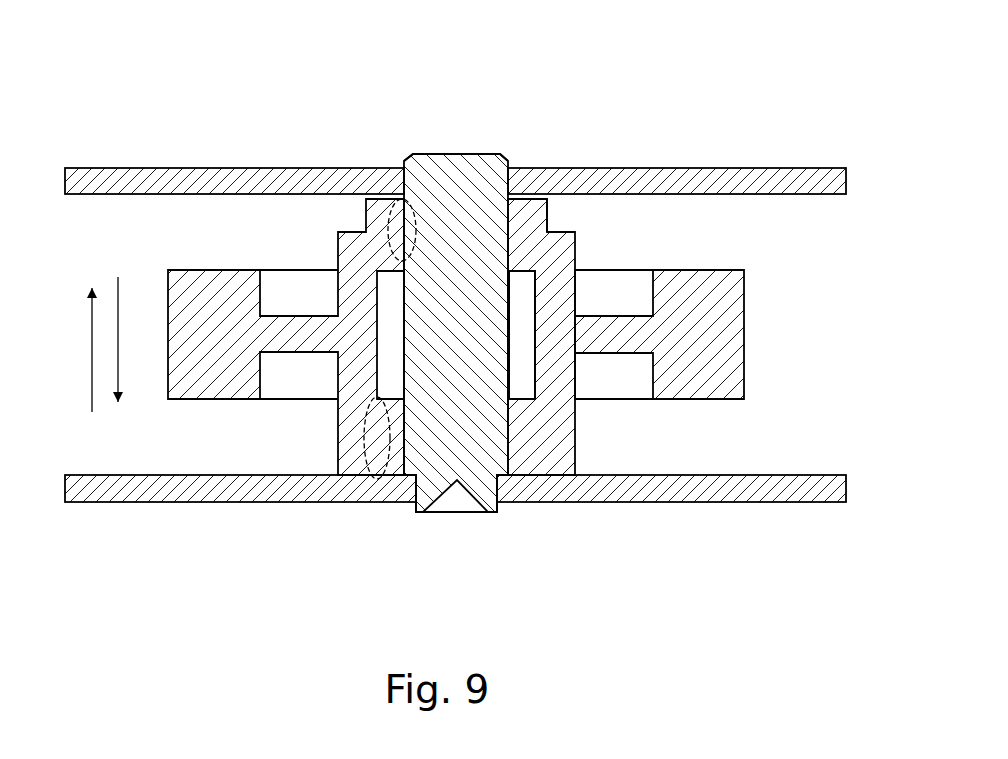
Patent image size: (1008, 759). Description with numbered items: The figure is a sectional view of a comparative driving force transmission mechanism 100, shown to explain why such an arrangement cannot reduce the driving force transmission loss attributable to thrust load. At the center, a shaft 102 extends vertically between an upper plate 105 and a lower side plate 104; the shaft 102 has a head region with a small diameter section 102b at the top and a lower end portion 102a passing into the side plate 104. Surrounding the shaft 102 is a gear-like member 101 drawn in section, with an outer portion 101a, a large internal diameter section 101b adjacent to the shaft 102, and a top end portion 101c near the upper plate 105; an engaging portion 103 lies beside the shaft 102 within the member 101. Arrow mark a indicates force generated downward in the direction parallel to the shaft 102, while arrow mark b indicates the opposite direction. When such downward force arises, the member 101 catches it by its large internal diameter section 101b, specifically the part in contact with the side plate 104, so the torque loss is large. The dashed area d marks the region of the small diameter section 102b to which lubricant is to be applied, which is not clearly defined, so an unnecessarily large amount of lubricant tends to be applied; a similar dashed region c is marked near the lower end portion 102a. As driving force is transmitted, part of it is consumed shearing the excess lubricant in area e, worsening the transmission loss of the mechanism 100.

The comparative driving force transmission mechanism 100 is at (557, 125).
The holding member 101 is at (746, 297).
The outer block portion of holding member 101a is at (747, 355).
The large internal diameter section 101b is at (545, 365).
The top end portion of holding member 101c is at (530, 207).
The shaft 102 is at (433, 155).
The lower end portion of shaft member 102a is at (413, 450).
The small diameter section 102b is at (467, 170).
The engaging portion 103 is at (513, 375).
The side plate 104 is at (245, 490).
The upper plate 105 is at (233, 168).
The arrow mark a is at (128, 339).
The direction b is at (82, 350).
The region c is at (365, 453).
The area d is at (390, 247).
The area e is at (522, 286).